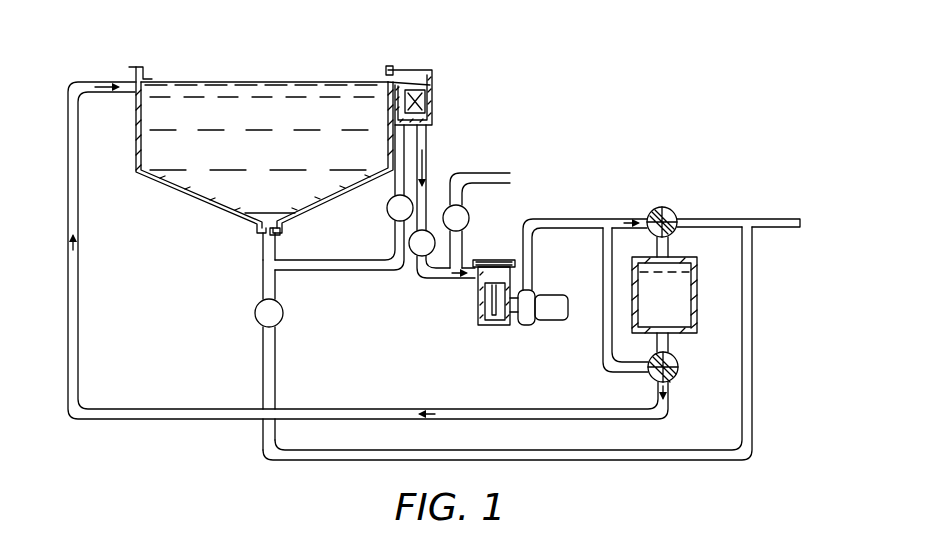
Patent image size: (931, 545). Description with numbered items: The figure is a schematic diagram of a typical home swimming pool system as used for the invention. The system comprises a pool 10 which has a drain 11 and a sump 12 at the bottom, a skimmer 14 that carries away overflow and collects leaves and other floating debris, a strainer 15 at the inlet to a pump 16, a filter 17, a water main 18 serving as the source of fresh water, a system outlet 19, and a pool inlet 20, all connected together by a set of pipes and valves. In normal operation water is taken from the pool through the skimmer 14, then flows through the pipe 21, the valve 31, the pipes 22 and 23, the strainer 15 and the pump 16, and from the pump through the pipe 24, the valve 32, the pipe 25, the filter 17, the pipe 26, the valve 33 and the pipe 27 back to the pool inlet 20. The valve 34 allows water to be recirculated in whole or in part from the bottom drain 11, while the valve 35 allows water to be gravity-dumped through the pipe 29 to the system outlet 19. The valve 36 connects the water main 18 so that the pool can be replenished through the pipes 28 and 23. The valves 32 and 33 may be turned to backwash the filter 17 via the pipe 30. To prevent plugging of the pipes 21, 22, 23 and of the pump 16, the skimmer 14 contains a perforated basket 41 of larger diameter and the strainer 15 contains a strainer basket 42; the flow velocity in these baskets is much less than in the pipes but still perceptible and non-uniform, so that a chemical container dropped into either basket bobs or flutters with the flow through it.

The pool 10 is at (216, 196).
The drain 11 is at (262, 238).
The sump 12 is at (283, 232).
The skimmer 14 is at (433, 72).
The strainer 15 is at (478, 316).
The pump 16 is at (530, 326).
The filter 17 is at (698, 292).
The water main 18 is at (512, 173).
The system outlet 19 is at (800, 222).
The pool inlet 20 is at (134, 96).
The pipe 21 is at (428, 150).
The pipe 22 is at (435, 283).
The pipe 23 is at (480, 260).
The pipe 24 is at (566, 217).
The pipe 25 is at (670, 241).
The pipe 26 is at (670, 345).
The pipe 27 is at (484, 409).
The pipe 28 is at (463, 242).
The pipe 29 is at (545, 450).
The pipe 30 is at (598, 262).
The valve 31 is at (414, 257).
The valve 32 is at (660, 207).
The valve 33 is at (651, 379).
The valve 34 is at (386, 209).
The valve 35 is at (284, 315).
The valve 36 is at (465, 210).
The perforated basket 41 is at (426, 103).
The strainer basket 42 is at (495, 326).